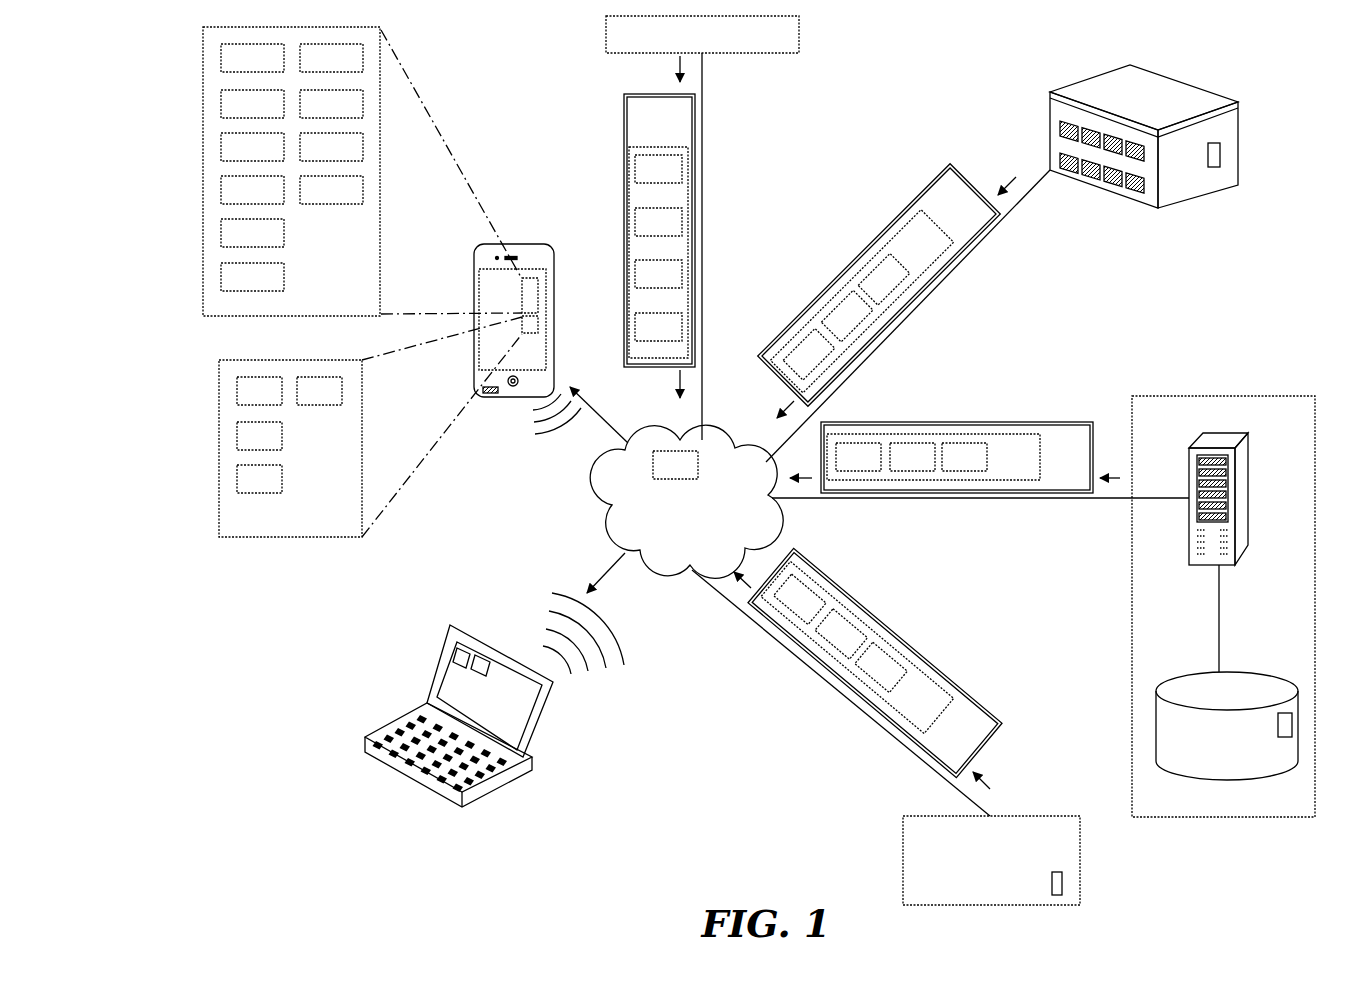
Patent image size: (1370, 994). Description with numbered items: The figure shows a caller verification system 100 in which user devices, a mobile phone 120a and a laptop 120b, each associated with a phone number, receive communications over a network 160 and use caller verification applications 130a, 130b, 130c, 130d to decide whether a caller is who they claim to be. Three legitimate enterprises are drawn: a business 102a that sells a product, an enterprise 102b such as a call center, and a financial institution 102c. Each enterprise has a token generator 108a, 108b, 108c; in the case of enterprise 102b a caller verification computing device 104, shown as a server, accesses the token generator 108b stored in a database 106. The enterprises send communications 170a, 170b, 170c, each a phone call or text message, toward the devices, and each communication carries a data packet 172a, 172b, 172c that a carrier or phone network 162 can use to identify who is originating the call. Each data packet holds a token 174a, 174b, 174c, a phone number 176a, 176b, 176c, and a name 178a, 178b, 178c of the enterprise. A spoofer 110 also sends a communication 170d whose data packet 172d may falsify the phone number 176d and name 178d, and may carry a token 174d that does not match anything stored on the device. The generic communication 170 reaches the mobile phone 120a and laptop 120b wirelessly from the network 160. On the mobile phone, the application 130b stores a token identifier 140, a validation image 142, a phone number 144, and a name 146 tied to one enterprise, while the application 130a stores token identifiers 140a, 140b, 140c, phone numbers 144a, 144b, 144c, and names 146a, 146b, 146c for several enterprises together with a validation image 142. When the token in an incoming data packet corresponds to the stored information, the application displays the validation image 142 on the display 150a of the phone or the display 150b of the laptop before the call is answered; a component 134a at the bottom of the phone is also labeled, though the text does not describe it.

The caller verification system 100 is at (256, 798).
The enterprise 102a is at (1162, 77).
The enterprise 102b is at (1262, 396).
The enterprise 102c is at (991, 860).
The caller verification computing device 104 is at (1250, 463).
The database 106 is at (1227, 726).
The token generator 108a is at (1222, 153).
The token generator 108b is at (1285, 713).
The token generator 108c is at (1062, 884).
The spoofer 110 is at (702, 34).
The mobile phone 120a is at (502, 243).
The laptop 120b is at (548, 719).
The caller verification application 130a is at (580, 297).
The caller verification application 130b is at (580, 321).
The caller verification application 130c is at (460, 646).
The caller verification application 130d is at (483, 656).
The input component 134a is at (491, 396).
The token identifier 140 is at (259, 391).
The token identifier 140a is at (252, 58).
The token identifier 140b is at (252, 104).
The token identifier 140c is at (252, 147).
The validation image 142 is at (300, 247).
The phone number 144 is at (259, 479).
The phone number 144a is at (252, 190).
The phone number 144b is at (252, 233).
The phone number 144c is at (252, 277).
The name 146 is at (319, 391).
The name 146a is at (331, 104).
The name 146b is at (331, 147).
The name 146c is at (331, 190).
The display 150a is at (490, 301).
The display 150b is at (457, 686).
The network 160 is at (686, 501).
The phone network 162 is at (675, 465).
The communication 170 is at (605, 488).
The communication 170a is at (879, 285).
The communication 170b is at (957, 457).
The communication 170c is at (875, 662).
The communication 170d is at (659, 230).
The data packet 172a is at (921, 242).
The data packet 172b is at (1017, 458).
The data packet 172c is at (921, 701).
The data packet 172d is at (658, 169).
The token 174a is at (884, 280).
The token 174b is at (964, 457).
The token 174c is at (881, 667).
The token 174d is at (658, 222).
The phone number 176a is at (847, 316).
The phone number 176b is at (912, 457).
The phone number 176c is at (841, 634).
The phone number 176d is at (658, 274).
The name 178a is at (809, 354).
The name 178b is at (858, 457).
The name 178c is at (800, 599).
The name 178d is at (658, 327).